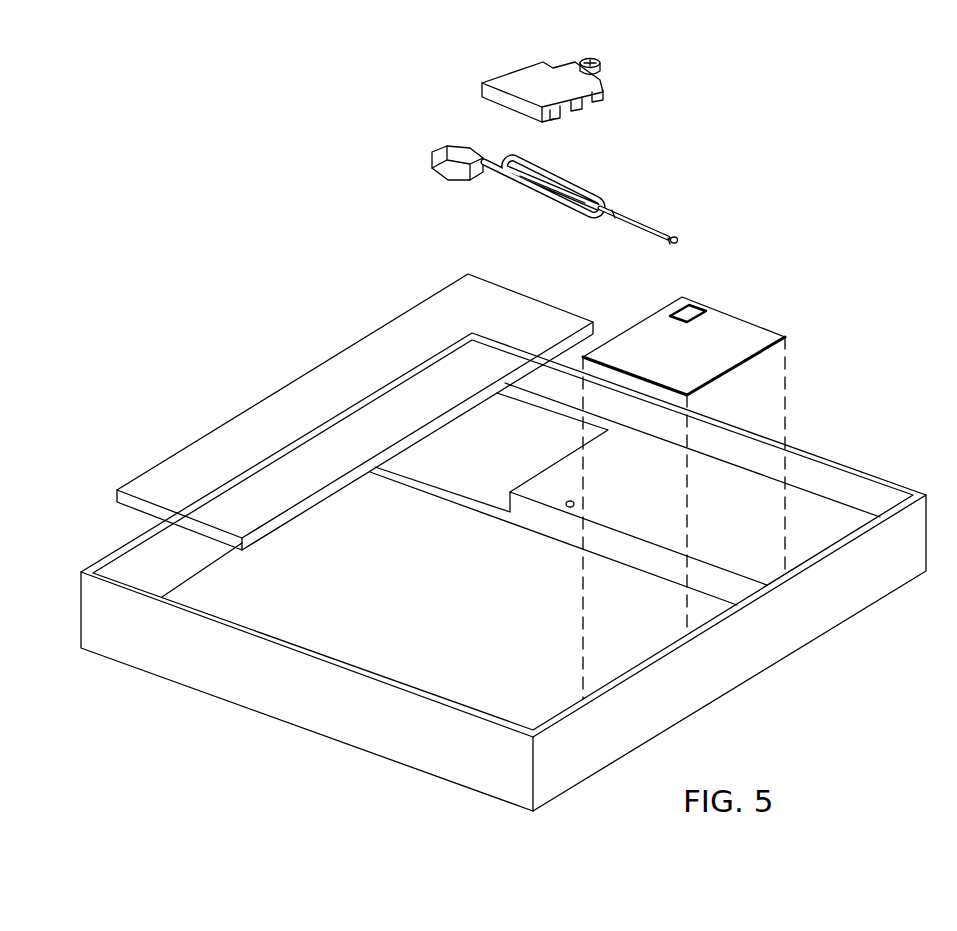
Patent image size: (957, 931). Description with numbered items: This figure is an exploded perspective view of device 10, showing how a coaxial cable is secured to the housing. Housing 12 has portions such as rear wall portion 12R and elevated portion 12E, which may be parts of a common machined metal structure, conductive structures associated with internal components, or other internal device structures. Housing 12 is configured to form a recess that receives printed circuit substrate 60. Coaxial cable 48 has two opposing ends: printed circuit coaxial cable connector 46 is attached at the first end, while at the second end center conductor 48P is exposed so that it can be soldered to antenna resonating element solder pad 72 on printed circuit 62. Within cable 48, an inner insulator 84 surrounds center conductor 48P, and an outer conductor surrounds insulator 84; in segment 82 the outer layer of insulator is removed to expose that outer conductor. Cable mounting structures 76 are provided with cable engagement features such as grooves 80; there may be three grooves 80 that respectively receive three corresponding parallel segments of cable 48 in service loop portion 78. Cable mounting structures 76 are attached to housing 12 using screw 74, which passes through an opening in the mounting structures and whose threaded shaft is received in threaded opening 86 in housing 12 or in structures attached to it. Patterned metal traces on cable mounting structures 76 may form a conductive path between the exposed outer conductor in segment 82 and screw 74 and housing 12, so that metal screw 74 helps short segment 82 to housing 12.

The device 10 is at (772, 100).
The housing 12 is at (763, 655).
The rear wall portion 12R is at (440, 660).
The elevated portion 12E is at (820, 507).
The printed circuit coaxial cable connector 46 is at (432, 176).
The coaxial cable 48 is at (597, 193).
The center conductor 48P is at (683, 238).
The printed circuit substrate 60 is at (230, 440).
The printed circuit 62 is at (762, 335).
The antenna resonating element solder pad 72 is at (692, 308).
The screw 74 is at (588, 58).
The cable mounting structures 76 is at (528, 78).
The service loop portion 78 is at (567, 226).
The grooves 80 is at (555, 125).
The segment 82 is at (552, 187).
The insulator 84 is at (655, 226).
The threaded opening 86 is at (569, 500).